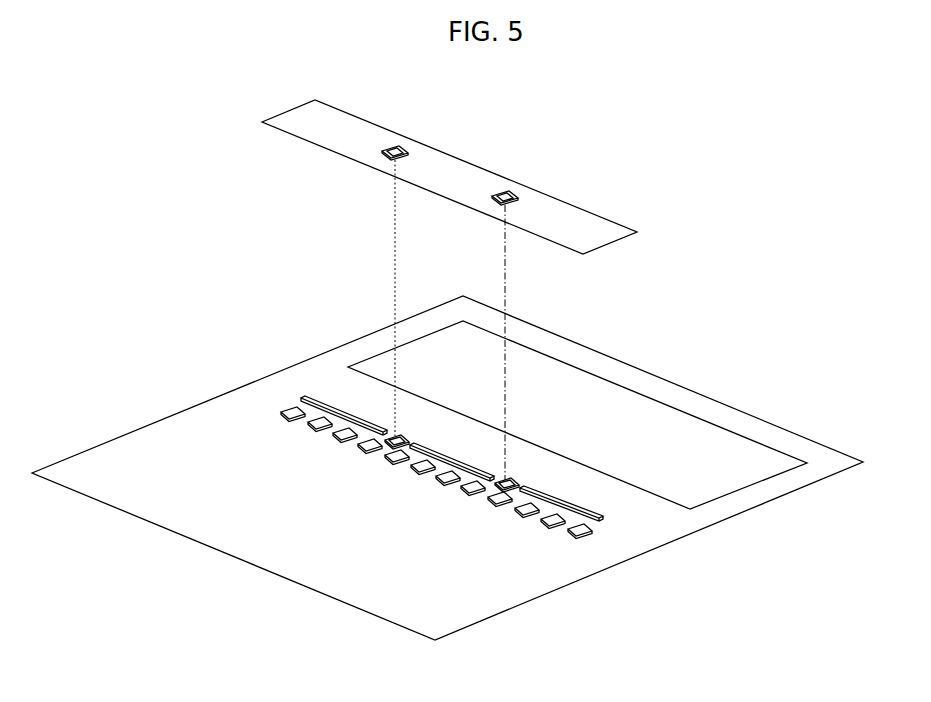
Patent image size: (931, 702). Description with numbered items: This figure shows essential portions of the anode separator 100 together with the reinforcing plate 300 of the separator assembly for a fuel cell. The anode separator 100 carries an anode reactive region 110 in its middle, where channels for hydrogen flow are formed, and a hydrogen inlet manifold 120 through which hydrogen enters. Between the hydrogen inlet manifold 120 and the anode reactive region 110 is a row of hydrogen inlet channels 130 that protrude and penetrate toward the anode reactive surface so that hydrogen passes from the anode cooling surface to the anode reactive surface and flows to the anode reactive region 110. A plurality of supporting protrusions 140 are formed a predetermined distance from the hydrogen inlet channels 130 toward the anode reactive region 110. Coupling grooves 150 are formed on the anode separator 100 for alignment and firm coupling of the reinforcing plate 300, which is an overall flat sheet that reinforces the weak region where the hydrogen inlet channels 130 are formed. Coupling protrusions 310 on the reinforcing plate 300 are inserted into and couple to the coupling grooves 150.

The first separator (anode separator) 100 is at (447, 479).
The anode reactive region 110 is at (260, 540).
The hydrogen inlet manifold 120 is at (730, 432).
The hydrogen inlet channels 130 is at (603, 516).
The supporting protrusions 140 is at (577, 532).
The coupling groove 150 is at (402, 438).
The reinforcing plate 300 is at (449, 274).
The coupling protrusion 310 is at (475, 158).